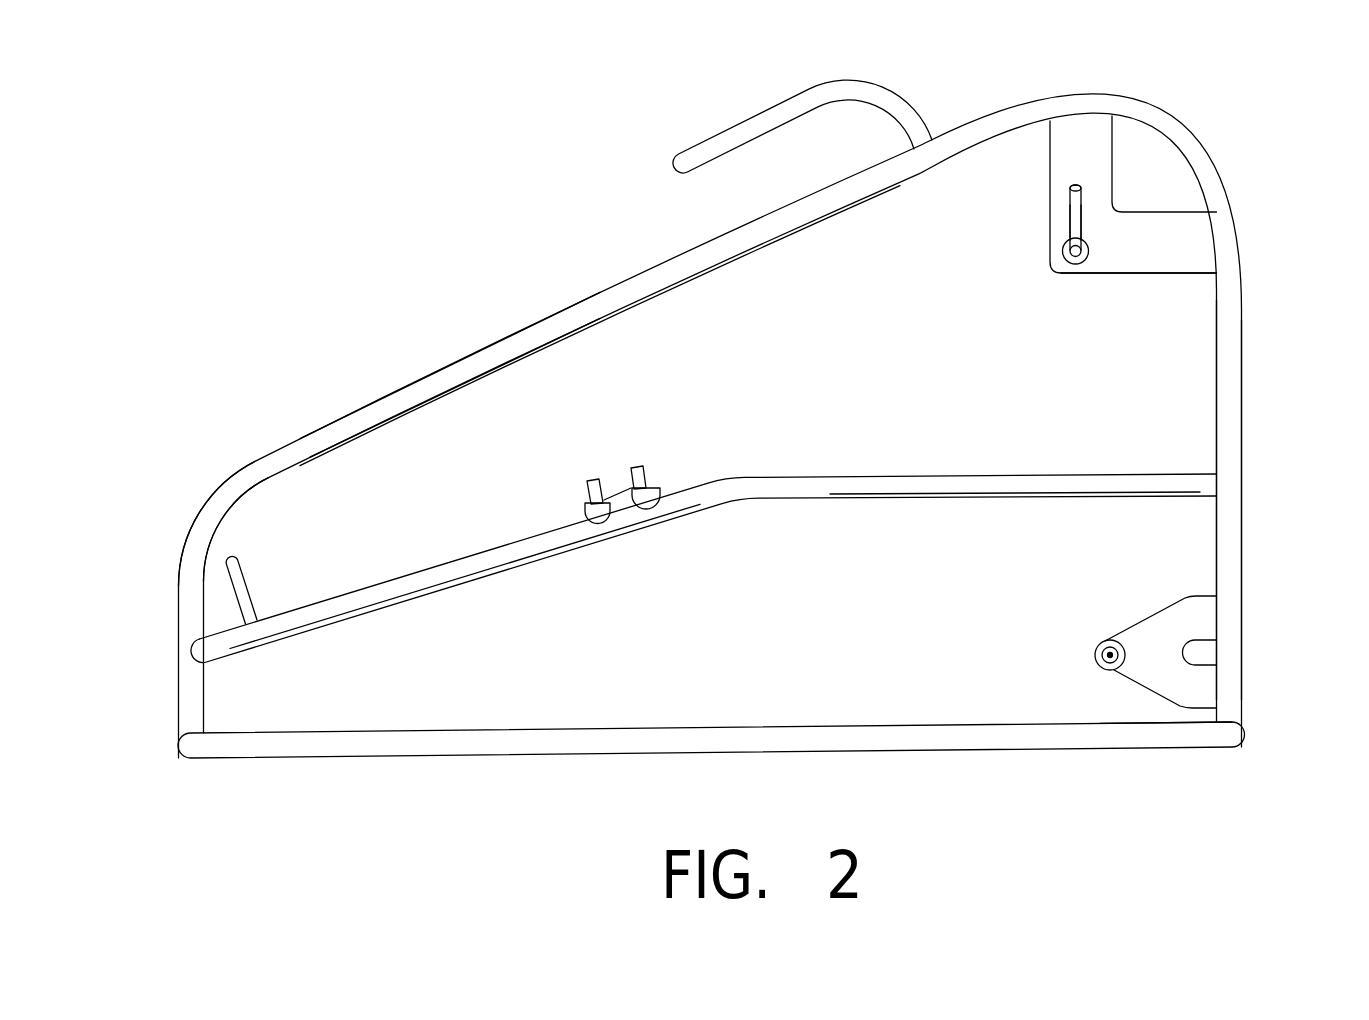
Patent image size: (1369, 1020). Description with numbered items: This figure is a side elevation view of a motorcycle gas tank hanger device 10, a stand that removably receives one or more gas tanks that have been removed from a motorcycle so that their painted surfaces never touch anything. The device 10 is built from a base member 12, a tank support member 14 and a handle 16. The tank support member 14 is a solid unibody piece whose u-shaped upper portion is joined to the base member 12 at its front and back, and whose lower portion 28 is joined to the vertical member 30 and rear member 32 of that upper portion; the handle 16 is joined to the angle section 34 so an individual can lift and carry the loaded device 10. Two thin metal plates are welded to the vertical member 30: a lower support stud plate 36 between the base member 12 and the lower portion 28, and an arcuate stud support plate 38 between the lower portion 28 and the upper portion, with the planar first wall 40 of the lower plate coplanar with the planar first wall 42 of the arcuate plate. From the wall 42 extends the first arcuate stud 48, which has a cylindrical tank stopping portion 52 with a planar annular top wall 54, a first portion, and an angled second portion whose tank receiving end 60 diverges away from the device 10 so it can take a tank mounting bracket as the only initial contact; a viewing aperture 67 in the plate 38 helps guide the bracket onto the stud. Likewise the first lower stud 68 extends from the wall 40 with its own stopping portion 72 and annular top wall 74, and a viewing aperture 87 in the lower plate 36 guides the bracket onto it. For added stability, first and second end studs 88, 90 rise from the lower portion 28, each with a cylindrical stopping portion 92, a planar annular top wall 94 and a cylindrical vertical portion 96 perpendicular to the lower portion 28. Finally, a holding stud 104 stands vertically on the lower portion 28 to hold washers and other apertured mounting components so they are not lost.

The motorcycle gas tank hanger device 10 is at (340, 176).
The base member 12 is at (775, 725).
The tank support member 14 is at (1172, 137).
The handle 16 is at (712, 141).
The lower portion 28 is at (1005, 483).
The vertical member 30 is at (1240, 393).
The rear member 32 is at (207, 513).
The angle section 34 is at (416, 382).
The lower support stud plate 36 is at (1163, 700).
The arcuate stud support plate 38 is at (1109, 225).
The planar first wall 40 is at (1156, 618).
The planar first wall 42 is at (1152, 257).
The first arcuate stud 48 is at (1079, 214).
The tank stopping portion 52 is at (1073, 263).
The annular top wall 54 is at (1013, 313).
The tank receiving end 60 is at (1113, 219).
The viewing aperture 67 is at (1163, 188).
The first lower stud 68 is at (1062, 598).
The tank stopping portion 72 is at (1118, 642).
The annular top wall 74 is at (1100, 641).
The viewing aperture 87 is at (1202, 655).
The first end stud 88 is at (600, 525).
The second end stud 90 is at (648, 511).
The tank stopping portion 92 is at (609, 496).
The annular top wall 94 is at (604, 482).
The vertical portion 96 is at (641, 468).
The holding stud 104 is at (243, 577).